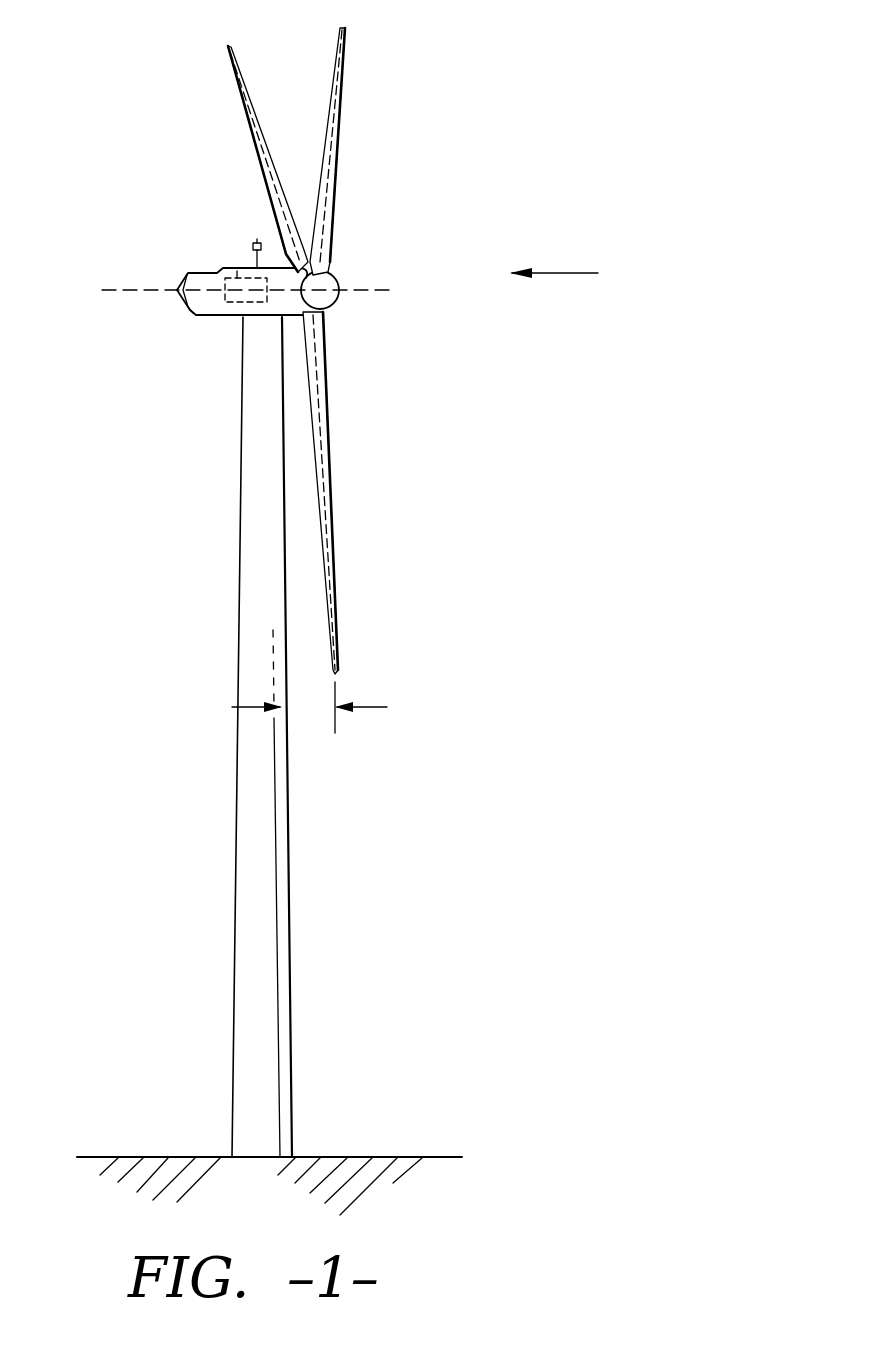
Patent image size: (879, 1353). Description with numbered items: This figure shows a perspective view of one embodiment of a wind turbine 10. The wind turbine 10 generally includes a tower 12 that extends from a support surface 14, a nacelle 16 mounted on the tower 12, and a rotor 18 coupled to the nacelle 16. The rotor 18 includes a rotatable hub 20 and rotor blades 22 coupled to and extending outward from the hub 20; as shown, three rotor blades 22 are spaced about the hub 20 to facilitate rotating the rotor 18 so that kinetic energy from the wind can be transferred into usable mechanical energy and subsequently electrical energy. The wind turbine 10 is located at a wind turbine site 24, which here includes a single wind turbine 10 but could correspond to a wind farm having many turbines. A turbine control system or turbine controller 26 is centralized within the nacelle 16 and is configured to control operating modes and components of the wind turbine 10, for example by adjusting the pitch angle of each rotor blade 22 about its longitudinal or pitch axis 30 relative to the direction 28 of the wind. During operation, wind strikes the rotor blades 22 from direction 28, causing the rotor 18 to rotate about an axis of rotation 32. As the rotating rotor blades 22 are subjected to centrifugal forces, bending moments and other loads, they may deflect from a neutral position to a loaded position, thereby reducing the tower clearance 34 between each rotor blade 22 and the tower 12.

The wind turbine 10 is at (443, 104).
The tower 12 is at (248, 852).
The support surface 14 is at (360, 1157).
The nacelle 16 is at (218, 318).
The rotor 18 is at (348, 316).
The hub 20 is at (340, 288).
The rotor blade 22 is at (250, 117).
The wind turbine site 24 is at (500, 602).
The turbine controller 26 is at (237, 271).
The direction of the wind 28 is at (563, 273).
The pitch axis 30 is at (262, 161).
The axis of rotation 32 is at (128, 290).
The tower clearance 34 is at (368, 707).